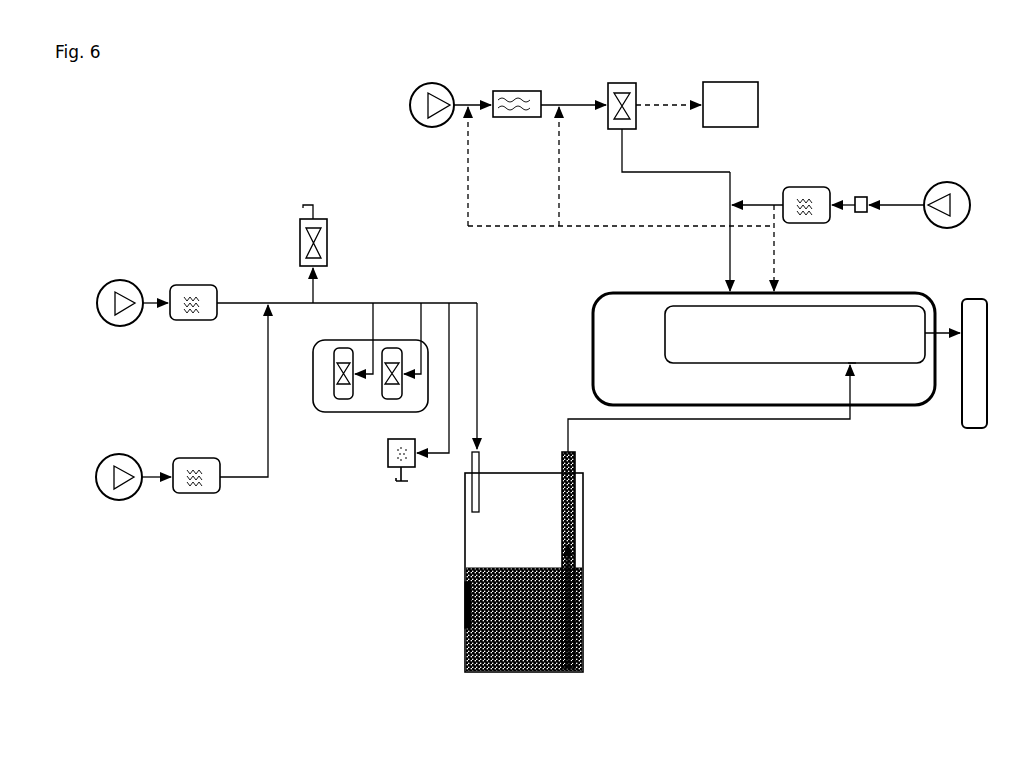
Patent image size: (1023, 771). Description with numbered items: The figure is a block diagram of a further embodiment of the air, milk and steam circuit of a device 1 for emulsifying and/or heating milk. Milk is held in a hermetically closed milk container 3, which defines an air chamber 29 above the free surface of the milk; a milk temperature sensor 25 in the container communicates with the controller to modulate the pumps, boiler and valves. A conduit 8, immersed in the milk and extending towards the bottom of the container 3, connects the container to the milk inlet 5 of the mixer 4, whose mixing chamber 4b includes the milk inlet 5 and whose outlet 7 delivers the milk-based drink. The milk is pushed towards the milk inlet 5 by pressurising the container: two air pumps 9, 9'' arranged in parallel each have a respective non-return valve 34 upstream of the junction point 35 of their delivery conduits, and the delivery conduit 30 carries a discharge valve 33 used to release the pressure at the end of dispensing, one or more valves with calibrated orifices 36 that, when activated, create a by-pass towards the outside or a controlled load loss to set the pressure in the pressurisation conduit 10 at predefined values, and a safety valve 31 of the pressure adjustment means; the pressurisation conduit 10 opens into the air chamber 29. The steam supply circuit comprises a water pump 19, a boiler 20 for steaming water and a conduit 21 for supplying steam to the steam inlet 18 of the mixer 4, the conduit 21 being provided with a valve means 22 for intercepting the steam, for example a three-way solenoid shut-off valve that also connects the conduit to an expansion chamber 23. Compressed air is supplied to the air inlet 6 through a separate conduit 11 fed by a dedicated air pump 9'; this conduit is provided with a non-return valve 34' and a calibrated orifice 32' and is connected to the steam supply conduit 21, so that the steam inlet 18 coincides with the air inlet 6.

The device for emulsifying and/or heating milk 1 is at (352, 555).
The milk container 3 is at (462, 657).
The mixer 4 is at (862, 400).
The mixing chamber 4b is at (850, 305).
The milk inlet 5 is at (853, 363).
The air inlet 6 is at (681, 236).
The steam inlet 18 is at (731, 300).
The outlet of milk-based drink 7 is at (935, 327).
The conduit 8 is at (663, 419).
The air pump 9 is at (99, 287).
The dedicated air pump 9' is at (938, 187).
The air pump 9'' is at (97, 461).
The pressurisation conduit 10 is at (479, 382).
The conduit for supplying compressed air 11 is at (750, 200).
The water pump 19 is at (420, 83).
The boiler 20 is at (520, 90).
The conduit for supplying steam 21 is at (667, 173).
The valve means for intercepting steam 22 is at (622, 82).
The expansion chamber 23 is at (730, 80).
The milk temperature sensor 25 is at (463, 595).
The air chamber 29 is at (524, 605).
The delivery conduit 30 is at (295, 301).
The safety valve 31 is at (387, 447).
The calibrated orifice 32' is at (859, 174).
The discharge valve 33 is at (300, 240).
The non-return valve 34 is at (181, 413).
The non-return valve 34' is at (806, 181).
The junction point 35 is at (263, 305).
The valves with calibrated orifices 36 is at (315, 377).